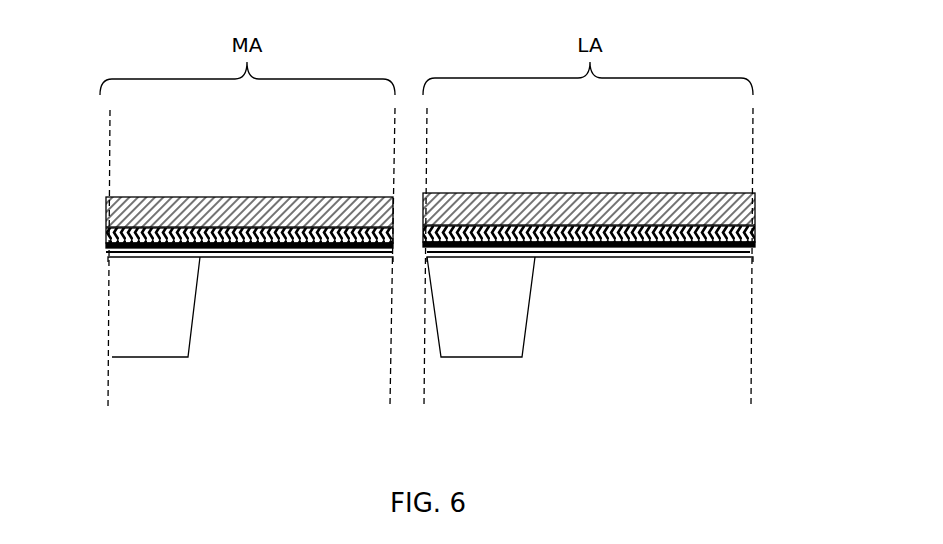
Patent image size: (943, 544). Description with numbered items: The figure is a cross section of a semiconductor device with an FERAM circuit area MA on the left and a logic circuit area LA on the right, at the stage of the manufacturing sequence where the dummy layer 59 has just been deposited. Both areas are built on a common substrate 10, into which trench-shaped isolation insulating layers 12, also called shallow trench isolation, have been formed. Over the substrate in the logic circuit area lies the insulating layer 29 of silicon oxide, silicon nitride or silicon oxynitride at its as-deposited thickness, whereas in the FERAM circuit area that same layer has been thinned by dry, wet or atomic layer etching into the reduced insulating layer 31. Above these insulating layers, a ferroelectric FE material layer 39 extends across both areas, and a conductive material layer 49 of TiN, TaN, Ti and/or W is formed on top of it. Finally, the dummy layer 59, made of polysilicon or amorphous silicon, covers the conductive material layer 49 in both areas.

The substrate 10 is at (228, 342).
The isolation insulating layer 12 is at (143, 308).
The insulating layer 29 is at (722, 251).
The reduced insulating layer 31 is at (135, 252).
The FE material layer 39 is at (165, 243).
The conductive material layer 49 is at (197, 233).
The dummy layer 59 is at (213, 205).